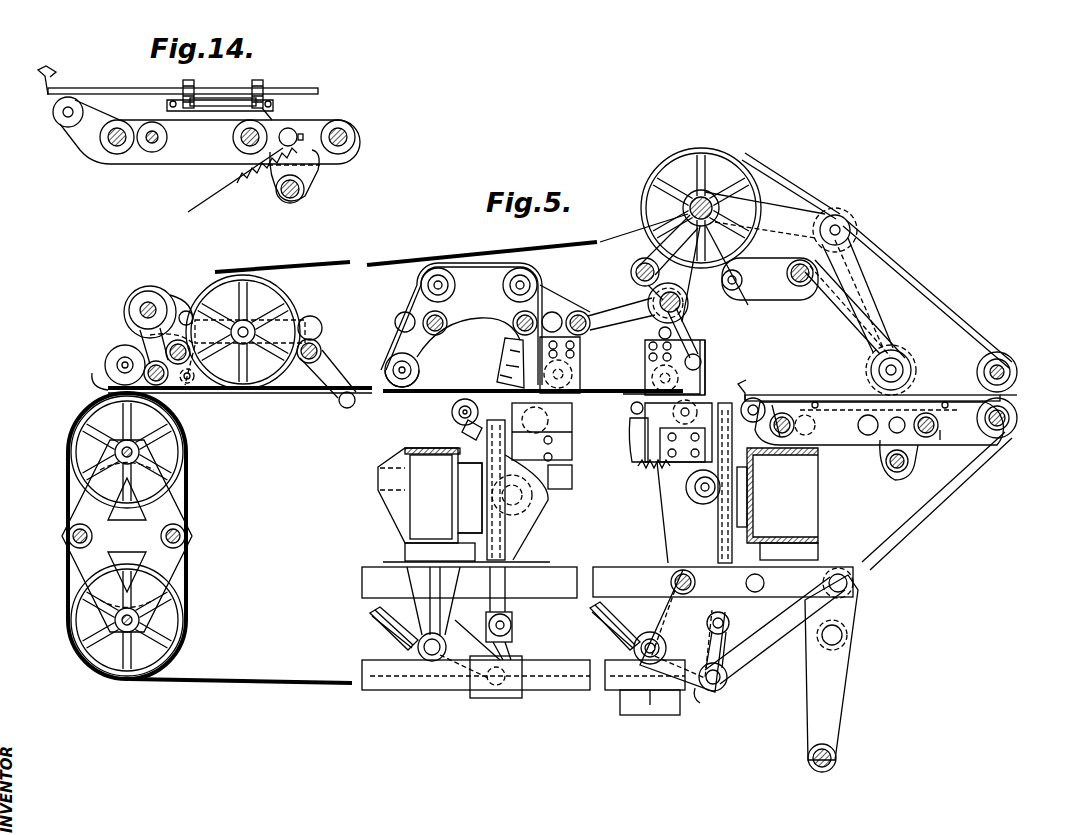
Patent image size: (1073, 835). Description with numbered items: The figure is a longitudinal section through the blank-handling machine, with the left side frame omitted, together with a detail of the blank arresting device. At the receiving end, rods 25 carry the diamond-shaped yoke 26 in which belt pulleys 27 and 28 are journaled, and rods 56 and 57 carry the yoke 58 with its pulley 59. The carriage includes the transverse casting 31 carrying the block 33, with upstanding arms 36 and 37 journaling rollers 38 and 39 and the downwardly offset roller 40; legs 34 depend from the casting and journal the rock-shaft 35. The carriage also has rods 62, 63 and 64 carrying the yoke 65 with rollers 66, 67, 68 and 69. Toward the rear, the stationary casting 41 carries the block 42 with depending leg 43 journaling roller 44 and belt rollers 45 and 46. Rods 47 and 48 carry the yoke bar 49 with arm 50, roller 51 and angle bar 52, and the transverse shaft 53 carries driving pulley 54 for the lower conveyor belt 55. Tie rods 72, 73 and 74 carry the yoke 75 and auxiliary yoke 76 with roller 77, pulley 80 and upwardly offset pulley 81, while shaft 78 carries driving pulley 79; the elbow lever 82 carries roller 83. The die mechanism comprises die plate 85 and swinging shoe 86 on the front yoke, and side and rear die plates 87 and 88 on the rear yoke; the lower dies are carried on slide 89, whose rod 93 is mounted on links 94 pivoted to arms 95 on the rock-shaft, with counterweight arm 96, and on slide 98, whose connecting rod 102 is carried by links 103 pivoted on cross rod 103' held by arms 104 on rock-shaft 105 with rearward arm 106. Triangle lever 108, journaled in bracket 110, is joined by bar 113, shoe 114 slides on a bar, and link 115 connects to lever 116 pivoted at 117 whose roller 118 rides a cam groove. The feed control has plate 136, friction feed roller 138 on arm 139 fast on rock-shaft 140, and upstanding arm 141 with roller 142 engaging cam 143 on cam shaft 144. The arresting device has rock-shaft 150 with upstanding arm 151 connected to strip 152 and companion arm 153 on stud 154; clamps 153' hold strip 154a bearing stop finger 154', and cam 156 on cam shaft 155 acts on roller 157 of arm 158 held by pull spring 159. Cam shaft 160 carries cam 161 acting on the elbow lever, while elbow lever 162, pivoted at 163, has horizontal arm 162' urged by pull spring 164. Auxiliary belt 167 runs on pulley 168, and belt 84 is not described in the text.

In FIG. 5, the parallel rods 25 is at (68, 534).
In FIG. 5, the diamond-shaped yoke 26 is at (165, 510).
In FIG. 5, the belt pulley 27 is at (170, 448).
In FIG. 5, the belt pulley 28 is at (168, 621).
In FIG. 5, the transversely disposed casting 31 is at (452, 498).
In FIG. 5, the built up block 33 is at (490, 508).
In FIG. 5, the legs 34 is at (422, 606).
In FIG. 5, the rock-shaft 35 is at (418, 647).
In FIG. 5, the upstanding arm 36 is at (468, 430).
In FIG. 5, the upstanding arm 37 is at (572, 470).
In FIG. 5, the roller 38 is at (452, 412).
In FIG. 5, the roller 39 is at (572, 414).
In FIG. 5, the downwardly offset roller 40 is at (546, 494).
In FIG. 5, the stationary casting 41 is at (768, 508).
In FIG. 5, the block 42 is at (718, 522).
In FIG. 5, the leg 43 is at (672, 555).
In FIG. 5, the roller 44 is at (728, 642).
In FIG. 5, the belt roller 45 is at (700, 404).
In FIG. 5, the belt roller 46 is at (688, 490).
In FIG. 14, the rod 47 is at (112, 140).
In FIG. 5, the rod 47 is at (784, 412).
In FIG. 14, the rod 48 is at (352, 135).
In FIG. 5, the rod 48 is at (926, 412).
In FIG. 14, the yoke bar 49 is at (192, 158).
In FIG. 5, the yoke bar 49 is at (832, 444).
In FIG. 5, the arm 50 is at (774, 424).
In FIG. 5, the roller 51 is at (755, 416).
In FIG. 5, the angle bar 52 is at (950, 428).
In FIG. 5, the transverse shaft 53 is at (1018, 418).
In FIG. 5, the belt driving pulley 54 is at (1015, 398).
In FIG. 5, the lower conveyor belt 55 is at (306, 396).
In FIG. 5, the parallel rod 56 is at (186, 346).
In FIG. 5, the parallel rod 57 is at (322, 350).
In FIG. 5, the yoke 58 is at (300, 326).
In FIG. 5, the pulley 59 is at (288, 322).
In FIG. 5, the parallel rod 62 is at (445, 318).
In FIG. 5, the parallel rod 63 is at (513, 324).
In FIG. 5, the parallel rod 64 is at (588, 318).
In FIG. 5, the yoke 65 is at (470, 276).
In FIG. 5, the roller 66 is at (392, 364).
In FIG. 5, the roller 67 is at (574, 386).
In FIG. 5, the roller 68 is at (440, 266).
In FIG. 5, the roller 69 is at (515, 266).
In FIG. 5, the tie rod 72 is at (632, 270).
In FIG. 5, the tie rod 73 is at (694, 197).
In FIG. 5, the tie rod 74 is at (790, 273).
In FIG. 5, the yoke 75 is at (640, 238).
In FIG. 5, the auxiliary yoke 76 is at (790, 212).
In FIG. 5, the roller 77 is at (842, 216).
In FIG. 5, the shaft 78 is at (990, 372).
In FIG. 5, the driving pulley 79 is at (985, 358).
In FIG. 5, the pulley 80 is at (905, 360).
In FIG. 5, the upwardly offset pulley 81 is at (738, 300).
In FIG. 5, the elbow lever 82 is at (690, 346).
In FIG. 5, the roller 83 is at (652, 380).
In FIG. 5, the belt 84 is at (358, 258).
In FIG. 5, the die plate 85 is at (500, 376).
In FIG. 5, the swinging shoe 86 is at (503, 352).
In FIG. 5, the side die plate 87 is at (645, 352).
In FIG. 5, the rear die plate 88 is at (703, 363).
In FIG. 5, the slide 89 is at (505, 566).
In FIG. 5, the horizontal rod 93 is at (508, 620).
In FIG. 5, the link 94 is at (508, 640).
In FIG. 5, the arm 95 is at (470, 649).
In FIG. 5, the arm 96 is at (374, 626).
In FIG. 5, the vertical slide 98 is at (742, 566).
In FIG. 5, the connecting rod 102 is at (728, 624).
In FIG. 5, the link 103 is at (775, 630).
In FIG. 5, the cross rod 103' is at (748, 677).
In FIG. 5, the arm 104 is at (711, 699).
In FIG. 5, the rock-shaft 105 is at (634, 649).
In FIG. 5, the rearwardly extending arm 106 is at (598, 618).
In FIG. 5, the triangle lever 108 is at (666, 618).
In FIG. 5, the bracket 110 is at (625, 694).
In FIG. 5, the bar 113 is at (578, 570).
In FIG. 5, the shoe 114 is at (522, 664).
In FIG. 5, the link 115 is at (799, 583).
In FIG. 5, the lever 116 is at (850, 606).
In FIG. 5, the pivot 117 is at (836, 757).
In FIG. 5, the roller 118 is at (845, 634).
In FIG. 5, the flat plate 136 is at (94, 382).
In FIG. 5, the friction feed roller 138 is at (116, 360).
In FIG. 5, the arm 139 is at (150, 368).
In FIG. 5, the rock-shaft 140 is at (187, 384).
In FIG. 5, the upstanding arm 141 is at (146, 352).
In FIG. 5, the roller 142 is at (186, 311).
In FIG. 5, the cam 143 is at (165, 288).
In FIG. 5, the cam shaft 144 is at (144, 305).
In FIG. 14, the rock-shaft 150 is at (233, 137).
In FIG. 14, the upstanding arm 151 is at (272, 118).
In FIG. 5, the upstanding arm 151 is at (880, 412).
In FIG. 14, the strip 152 is at (215, 98).
In FIG. 14, the companion arm 153 is at (194, 105).
In FIG. 5, the companion arm 153 is at (877, 405).
In FIG. 14, the clamps 153' is at (211, 83).
In FIG. 14, the stud 154 is at (133, 156).
In FIG. 14, the stop finger 154' is at (68, 73).
In FIG. 5, the stop finger 154' is at (762, 381).
In FIG. 14, the strip 154a is at (300, 91).
In FIG. 5, the strip 154a is at (872, 398).
In FIG. 14, the cam shaft 155 is at (302, 193).
In FIG. 5, the cam shaft 155 is at (902, 470).
In FIG. 14, the cam 156 is at (316, 172).
In FIG. 5, the cam 156 is at (890, 470).
In FIG. 14, the roller 157 is at (297, 132).
In FIG. 14, the arm 158 is at (244, 172).
In FIG. 14, the pull spring 159 is at (252, 198).
In FIG. 5, the cam shaft 160 is at (660, 300).
In FIG. 5, the cam 161 is at (655, 318).
In FIG. 5, the elbow lever 162 is at (623, 440).
In FIG. 5, the horizontal arm 162' is at (645, 386).
In FIG. 5, the pivot 163 is at (632, 408).
In FIG. 5, the pull spring 164 is at (648, 472).
In FIG. 5, the auxiliary belt 167 is at (758, 180).
In FIG. 5, the pulley 168 is at (706, 160).